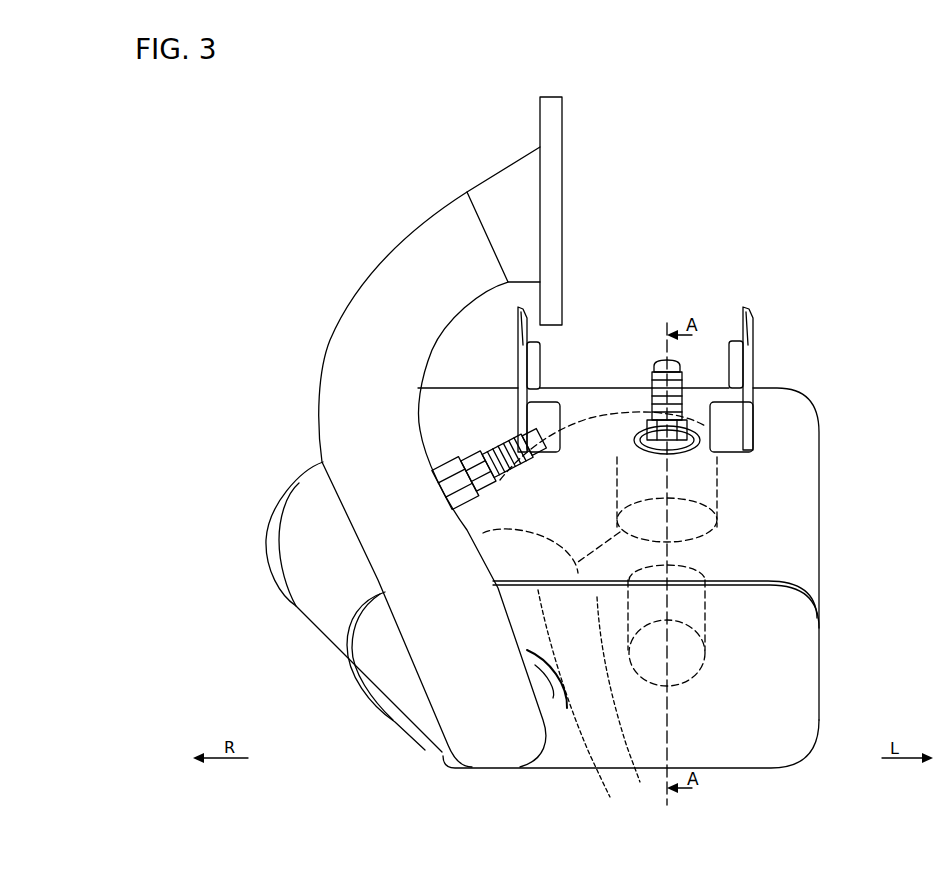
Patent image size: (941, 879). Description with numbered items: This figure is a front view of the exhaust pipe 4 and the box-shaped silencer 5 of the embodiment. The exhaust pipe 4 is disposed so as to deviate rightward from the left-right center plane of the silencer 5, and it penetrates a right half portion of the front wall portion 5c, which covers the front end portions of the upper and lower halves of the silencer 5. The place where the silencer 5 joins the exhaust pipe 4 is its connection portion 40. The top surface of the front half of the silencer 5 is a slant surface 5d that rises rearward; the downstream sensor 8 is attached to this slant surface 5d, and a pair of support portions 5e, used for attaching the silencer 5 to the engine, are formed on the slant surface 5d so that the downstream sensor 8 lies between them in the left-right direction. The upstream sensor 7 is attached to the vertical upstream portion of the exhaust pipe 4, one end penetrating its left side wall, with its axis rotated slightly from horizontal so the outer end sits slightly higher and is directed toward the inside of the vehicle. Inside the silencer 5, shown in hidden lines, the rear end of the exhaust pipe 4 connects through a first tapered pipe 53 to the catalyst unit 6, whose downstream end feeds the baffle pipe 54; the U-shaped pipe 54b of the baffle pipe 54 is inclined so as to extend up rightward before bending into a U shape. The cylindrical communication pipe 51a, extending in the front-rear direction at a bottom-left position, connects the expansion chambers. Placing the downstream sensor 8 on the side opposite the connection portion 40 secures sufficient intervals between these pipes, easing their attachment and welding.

The exhaust pipe 4 is at (360, 288).
The silencer 5 is at (653, 533).
The front wall portion 5c is at (773, 752).
The slant surface 5d is at (777, 472).
The support portions 5e is at (533, 362).
The catalyst unit 6 is at (624, 699).
The upstream sensor 7 is at (515, 447).
The downstream sensor 8 is at (656, 368).
The connection portion 40 is at (565, 716).
The communication pipe 51a is at (706, 628).
The first tapered pipe 53 is at (585, 703).
The baffle pipe 54 is at (727, 530).
The U-shaped pipe 54b is at (712, 497).